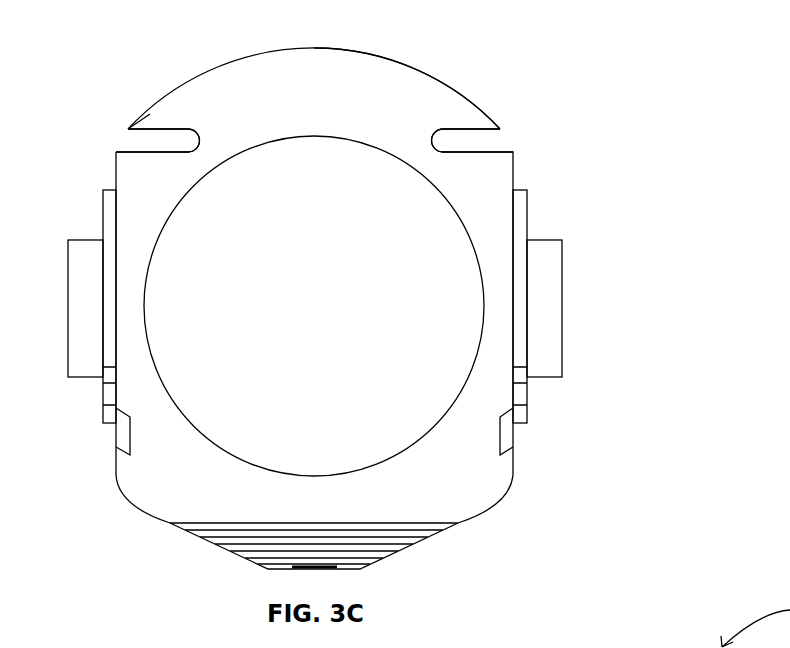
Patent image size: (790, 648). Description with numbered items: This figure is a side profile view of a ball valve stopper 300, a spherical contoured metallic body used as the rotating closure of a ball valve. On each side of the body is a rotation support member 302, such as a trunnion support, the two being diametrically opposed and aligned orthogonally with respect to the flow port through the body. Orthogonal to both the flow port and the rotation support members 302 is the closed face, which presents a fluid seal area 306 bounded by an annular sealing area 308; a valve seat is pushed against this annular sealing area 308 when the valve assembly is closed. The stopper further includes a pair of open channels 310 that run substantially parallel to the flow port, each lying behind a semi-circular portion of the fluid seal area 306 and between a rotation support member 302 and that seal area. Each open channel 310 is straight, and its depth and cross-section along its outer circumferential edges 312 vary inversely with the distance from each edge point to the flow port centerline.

The ball valve stopper 300 is at (653, 117).
The rotation support member 302 is at (68, 302).
The fluid seal area 306 is at (232, 62).
The annular sealing area 308 is at (477, 103).
The open channels 310 is at (158, 145).
The outer circumferential edges 312 is at (128, 126).